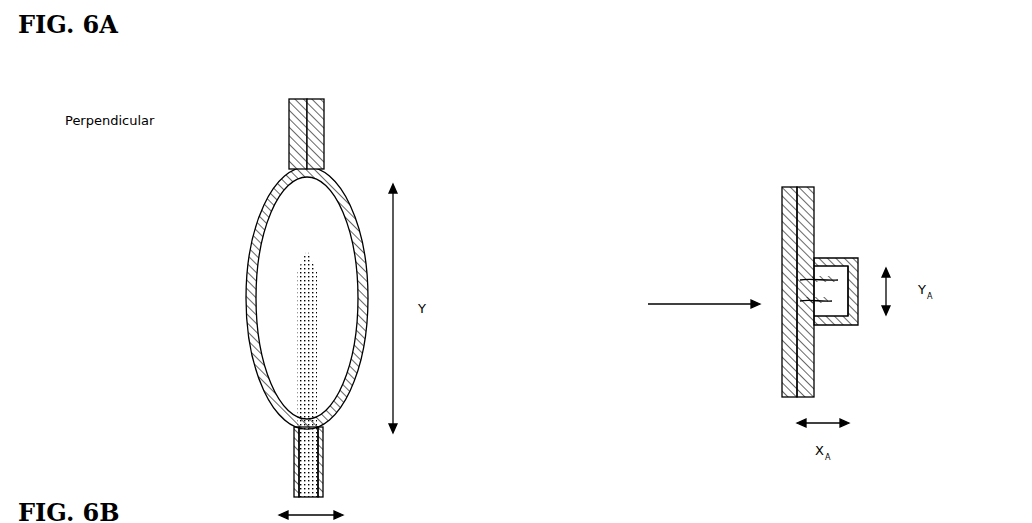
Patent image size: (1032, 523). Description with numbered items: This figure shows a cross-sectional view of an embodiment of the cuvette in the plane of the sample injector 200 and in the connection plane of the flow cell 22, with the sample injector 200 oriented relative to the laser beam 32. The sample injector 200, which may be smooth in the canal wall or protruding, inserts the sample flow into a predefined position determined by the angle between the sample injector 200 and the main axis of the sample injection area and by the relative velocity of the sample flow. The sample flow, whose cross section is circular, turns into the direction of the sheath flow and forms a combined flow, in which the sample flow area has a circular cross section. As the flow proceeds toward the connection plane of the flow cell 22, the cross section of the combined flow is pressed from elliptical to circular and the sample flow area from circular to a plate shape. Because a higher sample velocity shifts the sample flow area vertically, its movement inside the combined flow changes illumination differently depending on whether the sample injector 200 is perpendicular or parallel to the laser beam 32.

The sample injector 200 is at (310, 452).
The flow cell 22 is at (822, 246).
The laser beam 32 is at (678, 277).